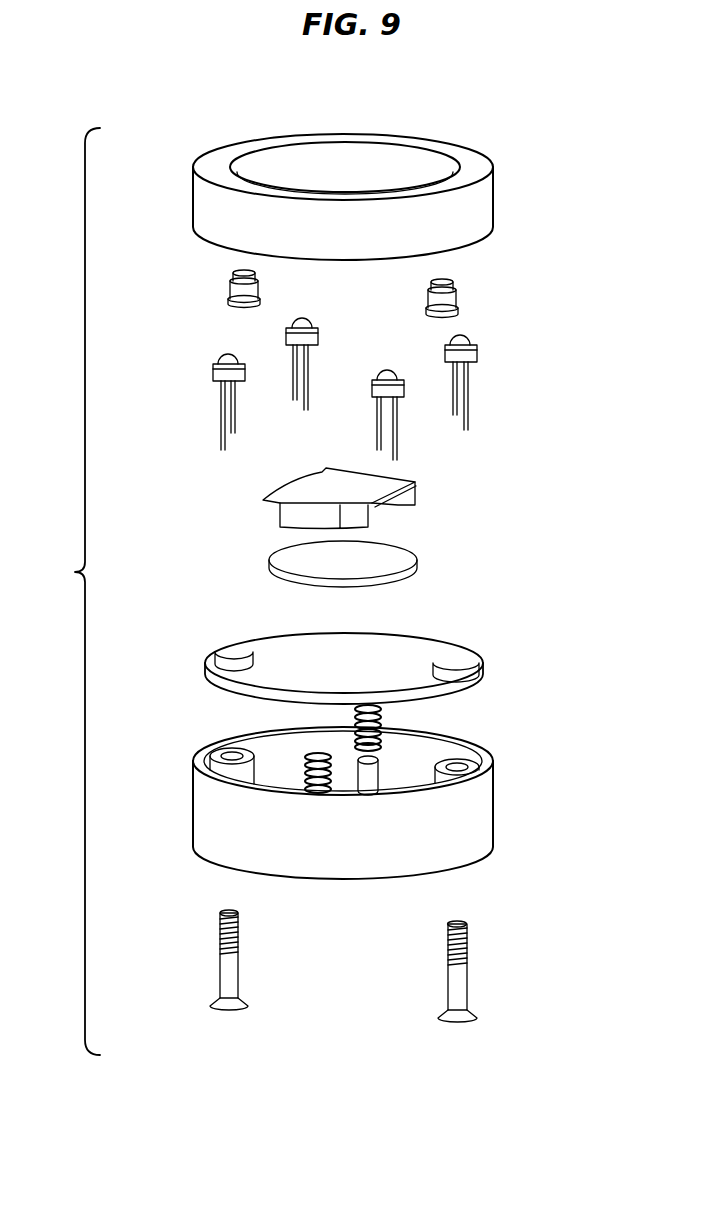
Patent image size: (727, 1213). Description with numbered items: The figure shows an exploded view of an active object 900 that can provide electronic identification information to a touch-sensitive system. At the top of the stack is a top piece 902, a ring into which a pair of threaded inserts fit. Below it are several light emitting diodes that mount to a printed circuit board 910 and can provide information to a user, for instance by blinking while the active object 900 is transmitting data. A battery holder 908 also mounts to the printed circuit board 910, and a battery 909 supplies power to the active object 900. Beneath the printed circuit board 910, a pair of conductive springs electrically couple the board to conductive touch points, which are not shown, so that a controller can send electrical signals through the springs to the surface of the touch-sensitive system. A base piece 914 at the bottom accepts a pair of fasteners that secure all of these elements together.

The active object 900 is at (67, 591).
The top piece 902 is at (485, 196).
The battery holder 908 is at (415, 478).
The battery 909 is at (405, 558).
The printed circuit board 910 is at (455, 652).
The base piece 914 is at (480, 808).